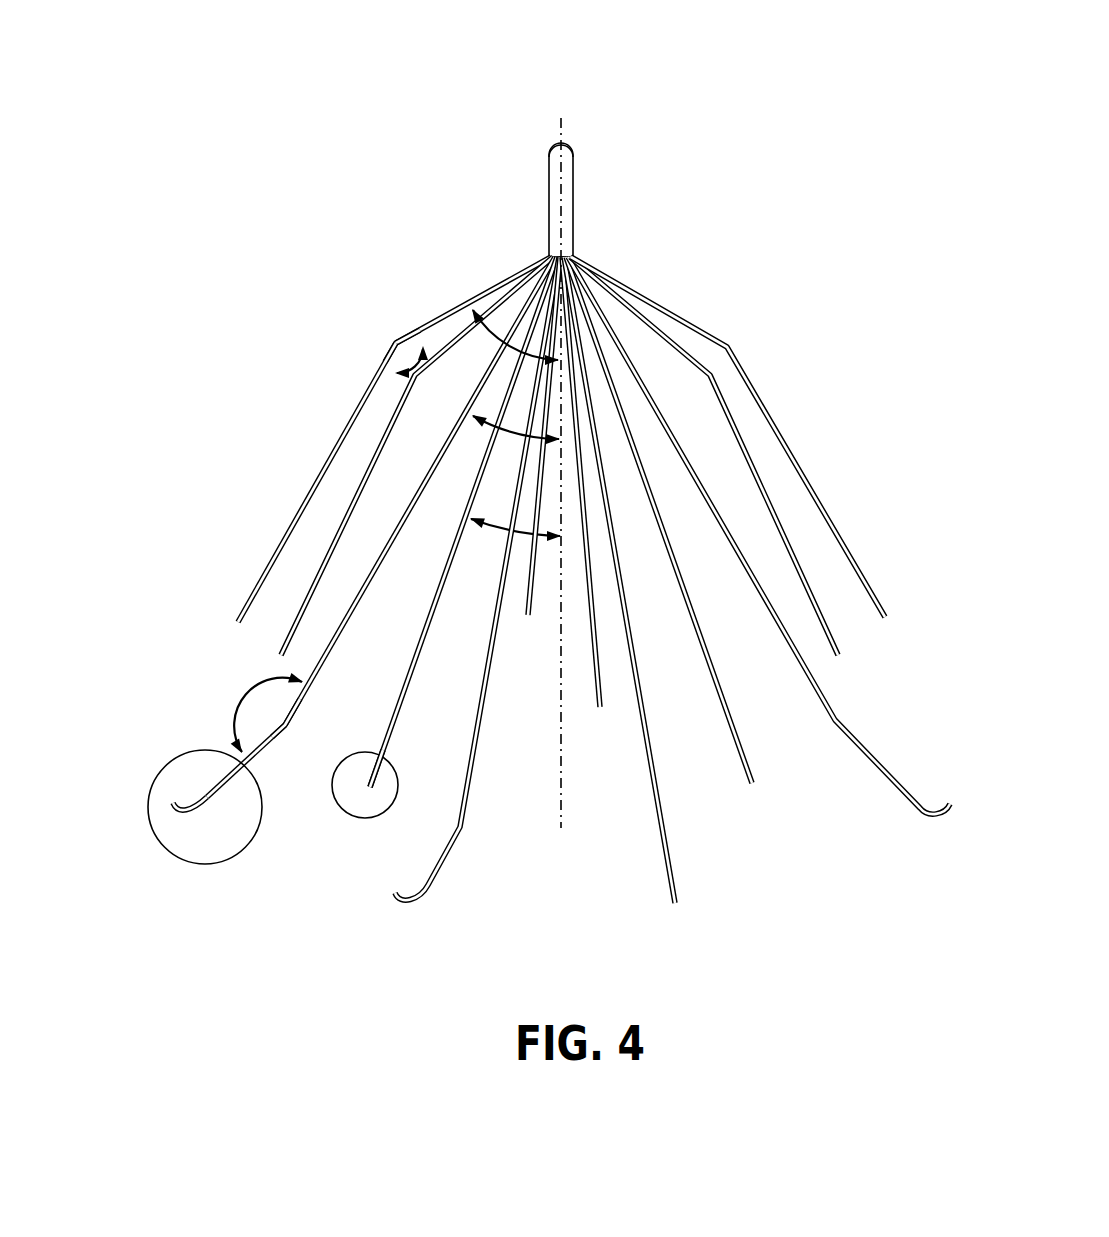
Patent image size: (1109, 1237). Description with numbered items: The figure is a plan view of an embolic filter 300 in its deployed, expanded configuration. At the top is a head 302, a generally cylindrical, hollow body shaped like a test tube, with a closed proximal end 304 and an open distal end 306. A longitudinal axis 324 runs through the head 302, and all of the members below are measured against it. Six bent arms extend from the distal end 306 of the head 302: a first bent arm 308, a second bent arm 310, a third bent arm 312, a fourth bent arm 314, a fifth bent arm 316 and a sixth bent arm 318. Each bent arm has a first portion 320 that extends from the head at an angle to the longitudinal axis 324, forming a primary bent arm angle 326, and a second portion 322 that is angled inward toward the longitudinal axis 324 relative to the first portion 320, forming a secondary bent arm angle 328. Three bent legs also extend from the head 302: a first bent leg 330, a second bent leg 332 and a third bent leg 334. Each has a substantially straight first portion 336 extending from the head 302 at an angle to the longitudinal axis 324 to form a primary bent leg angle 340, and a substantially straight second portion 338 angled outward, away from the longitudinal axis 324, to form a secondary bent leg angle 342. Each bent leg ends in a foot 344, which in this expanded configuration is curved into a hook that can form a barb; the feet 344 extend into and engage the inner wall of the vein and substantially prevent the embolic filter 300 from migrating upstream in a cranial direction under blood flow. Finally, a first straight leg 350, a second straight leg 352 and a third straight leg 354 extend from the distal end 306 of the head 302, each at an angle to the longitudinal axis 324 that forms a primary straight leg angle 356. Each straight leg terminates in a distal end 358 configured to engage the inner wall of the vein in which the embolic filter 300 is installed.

The embolic filter 300 is at (790, 142).
The head 302 is at (639, 200).
The proximal end 304 is at (639, 131).
The distal end 306 is at (639, 228).
The first bent arm 308 is at (347, 307).
The second bent arm 310 is at (379, 456).
The third bent arm 312 is at (564, 565).
The fourth bent arm 314 is at (655, 605).
The fifth bent arm 316 is at (735, 456).
The sixth bent arm 318 is at (728, 437).
The first portion 320 is at (450, 289).
The second portion 322 is at (275, 482).
The longitudinal axis 324 is at (566, 118).
The primary bent arm angle 326 is at (497, 294).
The secondary bent arm angle 328 is at (347, 345).
The first bent leg 330 is at (335, 774).
The second bent leg 332 is at (503, 596).
The third bent leg 334 is at (759, 535).
The first portion 336 is at (344, 491).
The second portion 338 is at (290, 805).
The primary bent leg angle 340 is at (651, 340).
The secondary bent leg angle 342 is at (224, 701).
The foot 344 is at (180, 807).
The first straight leg 350 is at (480, 621).
The second straight leg 352 is at (667, 580).
The third straight leg 354 is at (706, 520).
The primary straight leg angle 356 is at (364, 583).
The distal end 358 is at (418, 845).